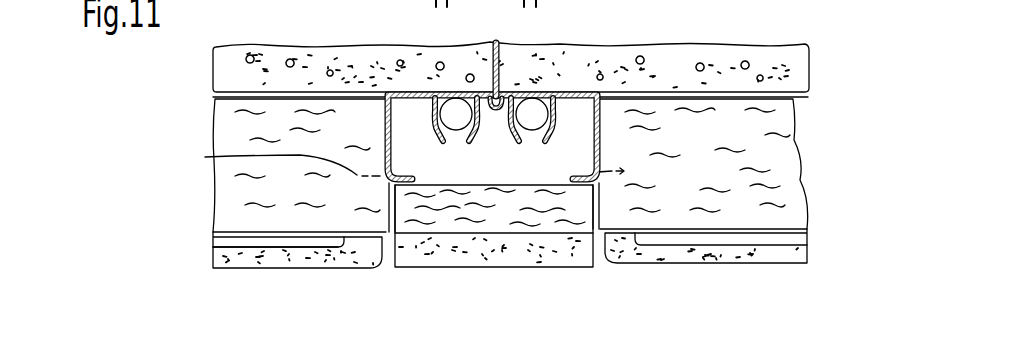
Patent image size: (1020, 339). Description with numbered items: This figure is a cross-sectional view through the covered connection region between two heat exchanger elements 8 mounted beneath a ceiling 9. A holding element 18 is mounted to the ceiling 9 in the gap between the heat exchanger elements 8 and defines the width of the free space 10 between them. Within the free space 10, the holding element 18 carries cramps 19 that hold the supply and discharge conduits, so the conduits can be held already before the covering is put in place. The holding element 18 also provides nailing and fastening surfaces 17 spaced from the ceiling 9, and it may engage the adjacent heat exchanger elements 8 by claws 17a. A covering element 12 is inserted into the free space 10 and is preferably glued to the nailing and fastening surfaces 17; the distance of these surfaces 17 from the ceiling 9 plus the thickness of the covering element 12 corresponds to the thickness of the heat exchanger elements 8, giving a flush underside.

The heat exchanger element 8 is at (323, 273).
The ceiling 9 is at (780, 63).
The free space 10 is at (477, 171).
The covering element 12 is at (490, 270).
The nailing and fastening surface 17 is at (395, 186).
The claw 17a is at (205, 157).
The holding element 18 is at (503, 98).
The cramp 19 is at (478, 130).